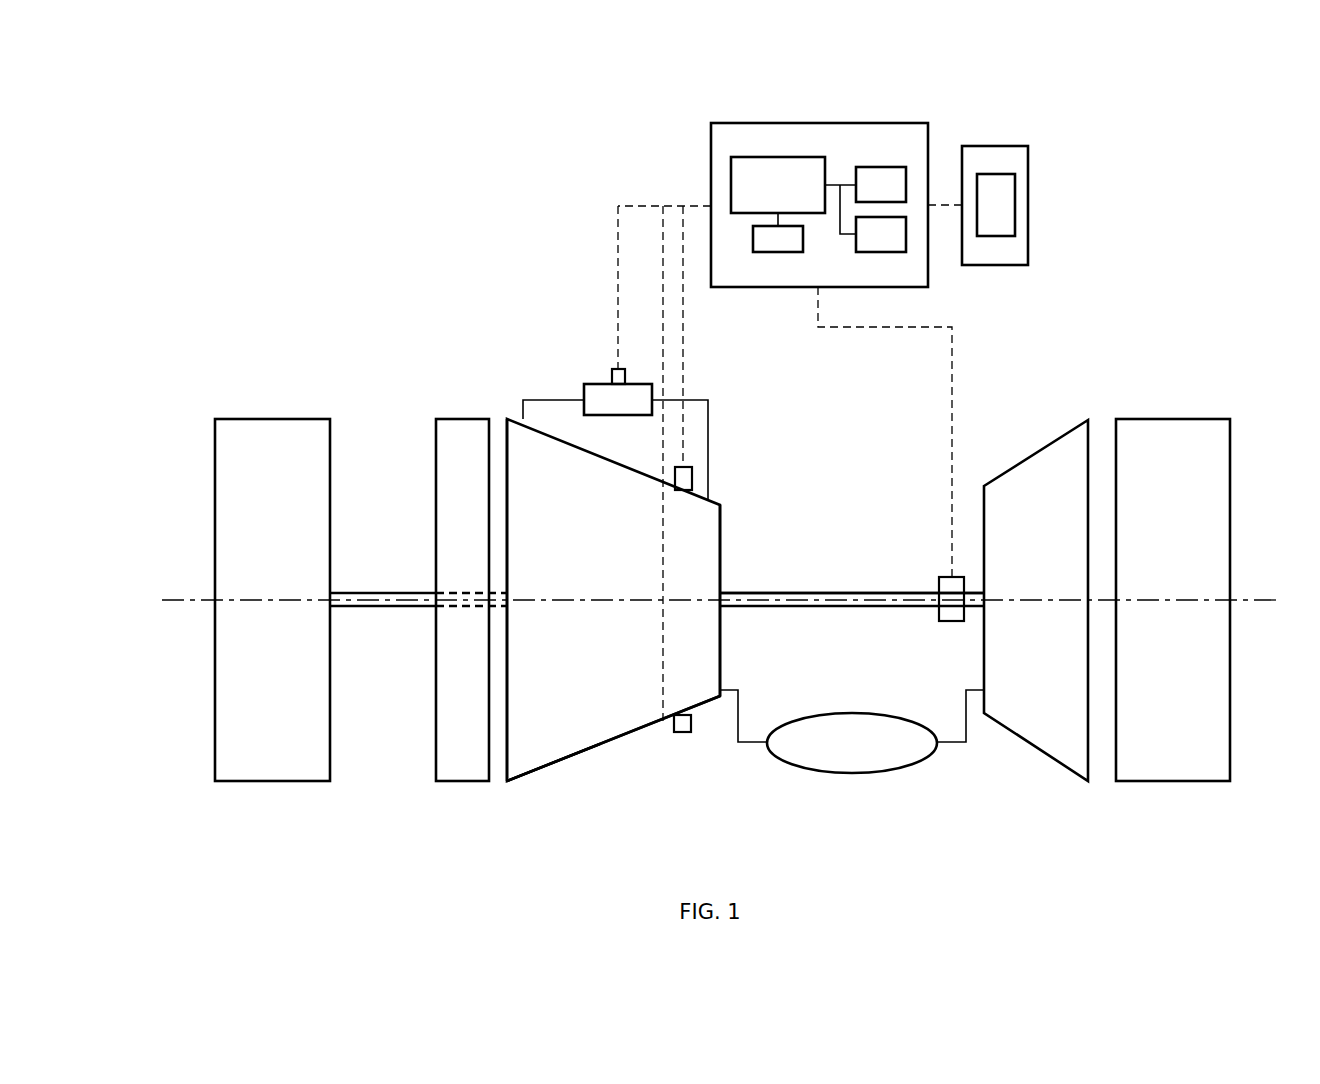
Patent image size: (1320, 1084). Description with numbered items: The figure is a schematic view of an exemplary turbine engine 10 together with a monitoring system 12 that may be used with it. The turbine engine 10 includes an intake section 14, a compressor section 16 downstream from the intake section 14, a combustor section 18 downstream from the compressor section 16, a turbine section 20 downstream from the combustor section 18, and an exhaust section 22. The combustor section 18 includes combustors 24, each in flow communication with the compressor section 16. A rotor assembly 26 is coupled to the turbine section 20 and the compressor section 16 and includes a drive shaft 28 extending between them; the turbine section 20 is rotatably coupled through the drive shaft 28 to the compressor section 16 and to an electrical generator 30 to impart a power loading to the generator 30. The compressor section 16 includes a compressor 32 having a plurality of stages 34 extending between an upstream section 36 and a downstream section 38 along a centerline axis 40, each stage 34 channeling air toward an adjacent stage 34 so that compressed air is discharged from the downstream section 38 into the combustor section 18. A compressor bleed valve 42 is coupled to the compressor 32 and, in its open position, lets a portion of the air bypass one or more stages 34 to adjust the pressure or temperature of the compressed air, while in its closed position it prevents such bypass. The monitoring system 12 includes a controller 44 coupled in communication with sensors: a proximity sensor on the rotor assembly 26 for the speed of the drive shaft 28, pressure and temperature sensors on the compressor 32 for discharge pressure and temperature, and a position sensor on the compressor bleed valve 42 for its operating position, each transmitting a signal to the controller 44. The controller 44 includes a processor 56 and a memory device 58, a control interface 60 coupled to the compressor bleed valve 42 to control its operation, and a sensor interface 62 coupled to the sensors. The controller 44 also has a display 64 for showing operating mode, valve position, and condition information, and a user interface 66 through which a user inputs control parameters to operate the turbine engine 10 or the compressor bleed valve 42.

The turbine engine 10 is at (1133, 290).
The monitoring system 12 is at (533, 267).
The intake section 14 is at (463, 419).
The compressor section 16 is at (668, 812).
The combustor section 18 is at (860, 790).
The turbine section 20 is at (1068, 432).
The exhaust section 22 is at (1185, 419).
The combustor 24 is at (860, 713).
The rotor assembly 26 is at (833, 565).
The drive shaft 28 is at (840, 606).
The electrical generator 30 is at (267, 419).
The compressor 32 is at (600, 745).
The stages 34 is at (580, 793).
The upstream section 36 is at (540, 770).
The downstream section 38 is at (708, 703).
The centerline axis 40 is at (180, 598).
The compressor bleed valve 42 is at (590, 384).
The controller 44 is at (893, 123).
The processor 56 is at (778, 157).
The memory device 58 is at (777, 252).
The control interface 60 is at (881, 167).
The sensor interface 62 is at (881, 252).
The display 64 is at (1028, 156).
The user interface 66 is at (1015, 205).